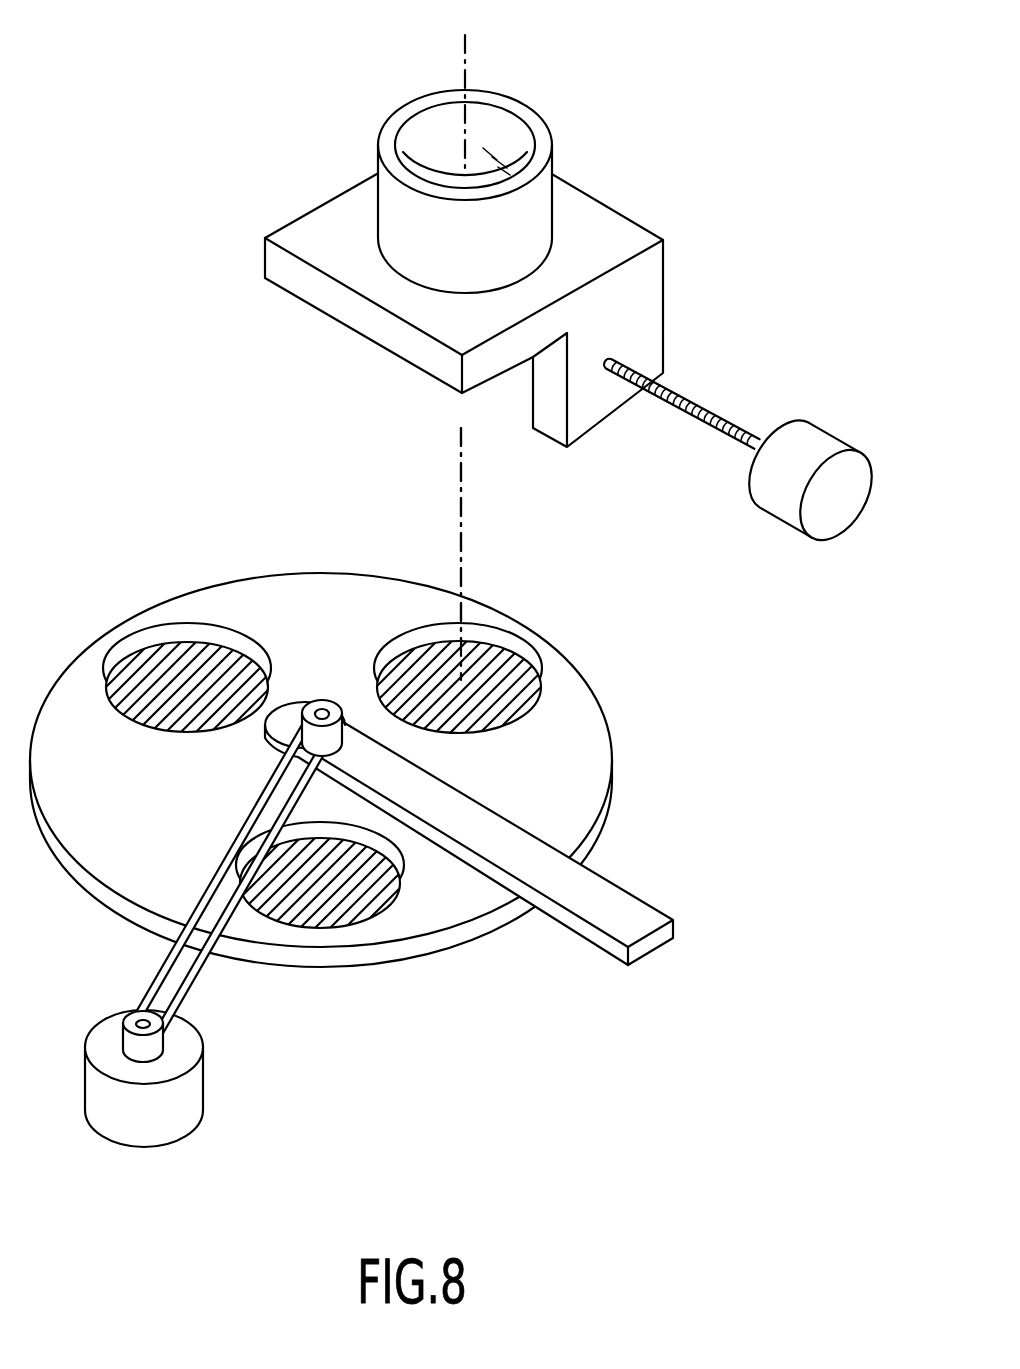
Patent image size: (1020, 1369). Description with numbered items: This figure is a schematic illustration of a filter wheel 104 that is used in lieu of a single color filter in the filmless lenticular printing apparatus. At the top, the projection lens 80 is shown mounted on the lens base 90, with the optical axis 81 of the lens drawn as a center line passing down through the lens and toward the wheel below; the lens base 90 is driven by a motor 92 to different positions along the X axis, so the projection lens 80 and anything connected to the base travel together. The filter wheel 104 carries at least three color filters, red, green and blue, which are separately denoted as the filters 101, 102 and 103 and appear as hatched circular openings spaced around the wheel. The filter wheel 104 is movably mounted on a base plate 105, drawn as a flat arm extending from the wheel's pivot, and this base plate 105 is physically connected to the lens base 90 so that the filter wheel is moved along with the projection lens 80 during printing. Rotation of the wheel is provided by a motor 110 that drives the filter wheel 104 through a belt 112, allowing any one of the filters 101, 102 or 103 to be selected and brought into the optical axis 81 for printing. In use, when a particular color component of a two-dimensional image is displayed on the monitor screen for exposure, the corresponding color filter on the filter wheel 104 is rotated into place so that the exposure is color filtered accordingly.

The projection lens 80 is at (388, 203).
The optical axis 81 is at (465, 58).
The lens base 90 is at (587, 217).
The motor 92 is at (808, 438).
The red color filter 101 is at (350, 912).
The green color filter 102 is at (172, 653).
The blue color filter 103 is at (503, 670).
The filter wheel 104 is at (580, 762).
The base plate 105 is at (638, 913).
The motor 110 is at (193, 1105).
The belt 112 is at (207, 968).